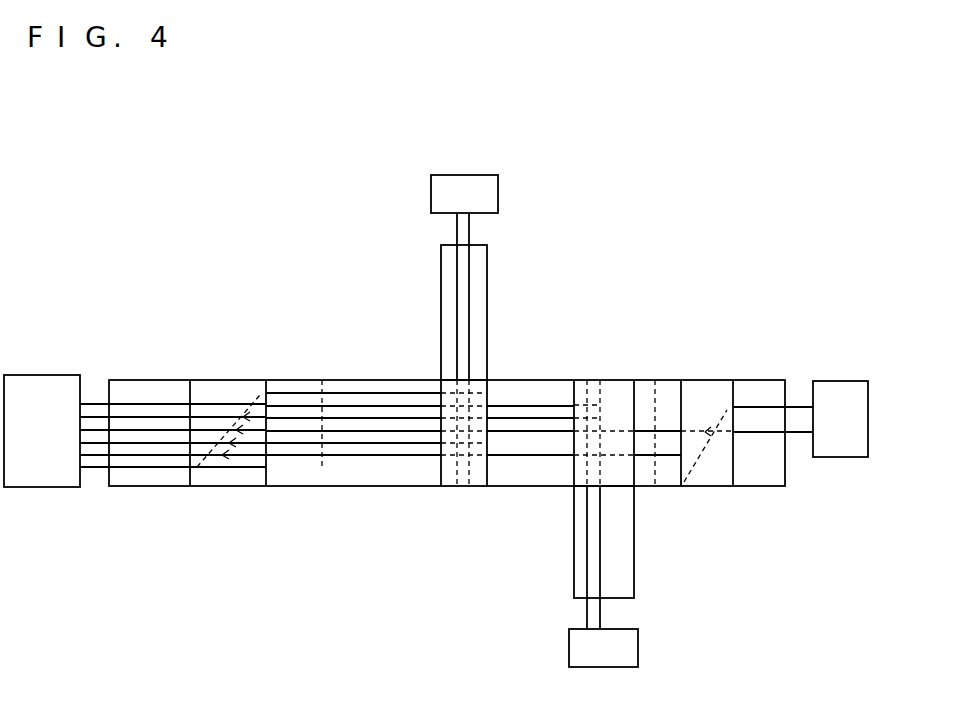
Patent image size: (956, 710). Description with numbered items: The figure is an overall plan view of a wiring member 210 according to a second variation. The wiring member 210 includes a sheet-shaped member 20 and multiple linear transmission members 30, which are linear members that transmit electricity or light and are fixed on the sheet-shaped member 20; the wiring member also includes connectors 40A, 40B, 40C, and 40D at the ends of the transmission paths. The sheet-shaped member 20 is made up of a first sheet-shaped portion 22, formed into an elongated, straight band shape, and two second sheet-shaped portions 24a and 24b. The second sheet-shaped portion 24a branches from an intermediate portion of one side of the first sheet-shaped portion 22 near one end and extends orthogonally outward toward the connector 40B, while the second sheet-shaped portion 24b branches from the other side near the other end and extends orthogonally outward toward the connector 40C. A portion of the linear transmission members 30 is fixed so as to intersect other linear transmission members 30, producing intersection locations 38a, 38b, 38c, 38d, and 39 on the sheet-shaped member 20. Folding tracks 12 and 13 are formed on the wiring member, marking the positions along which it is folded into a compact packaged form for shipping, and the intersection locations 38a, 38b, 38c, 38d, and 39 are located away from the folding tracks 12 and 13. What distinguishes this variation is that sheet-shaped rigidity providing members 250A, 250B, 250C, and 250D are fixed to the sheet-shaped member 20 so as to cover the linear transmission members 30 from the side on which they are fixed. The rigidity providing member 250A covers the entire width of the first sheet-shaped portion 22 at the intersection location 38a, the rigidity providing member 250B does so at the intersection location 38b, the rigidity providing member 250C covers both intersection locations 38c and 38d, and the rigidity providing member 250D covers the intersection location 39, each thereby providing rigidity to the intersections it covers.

The wiring member 210 is at (321, 215).
The sheet-shaped member 20 is at (403, 488).
The folding track 12 is at (325, 472).
The folding track 13 is at (656, 474).
The first sheet-shaped portion 22 is at (391, 380).
The second sheet-shaped portion 24a is at (488, 275).
The second sheet-shaped portion 24b is at (635, 583).
The linear transmission member 30 is at (130, 403).
The intersection location 39 is at (718, 456).
The intersection location 38a is at (258, 440).
The intersection location 38b is at (475, 487).
The intersection location 38c is at (614, 445).
The intersection location 38d is at (575, 442).
The connector 40A is at (44, 375).
The connector 40B is at (499, 197).
The connector 40C is at (639, 650).
The connector 40D is at (841, 458).
The rigidity providing member 250A is at (216, 388).
The rigidity providing member 250B is at (478, 392).
The rigidity providing member 250C is at (597, 390).
The rigidity providing member 250D is at (712, 392).